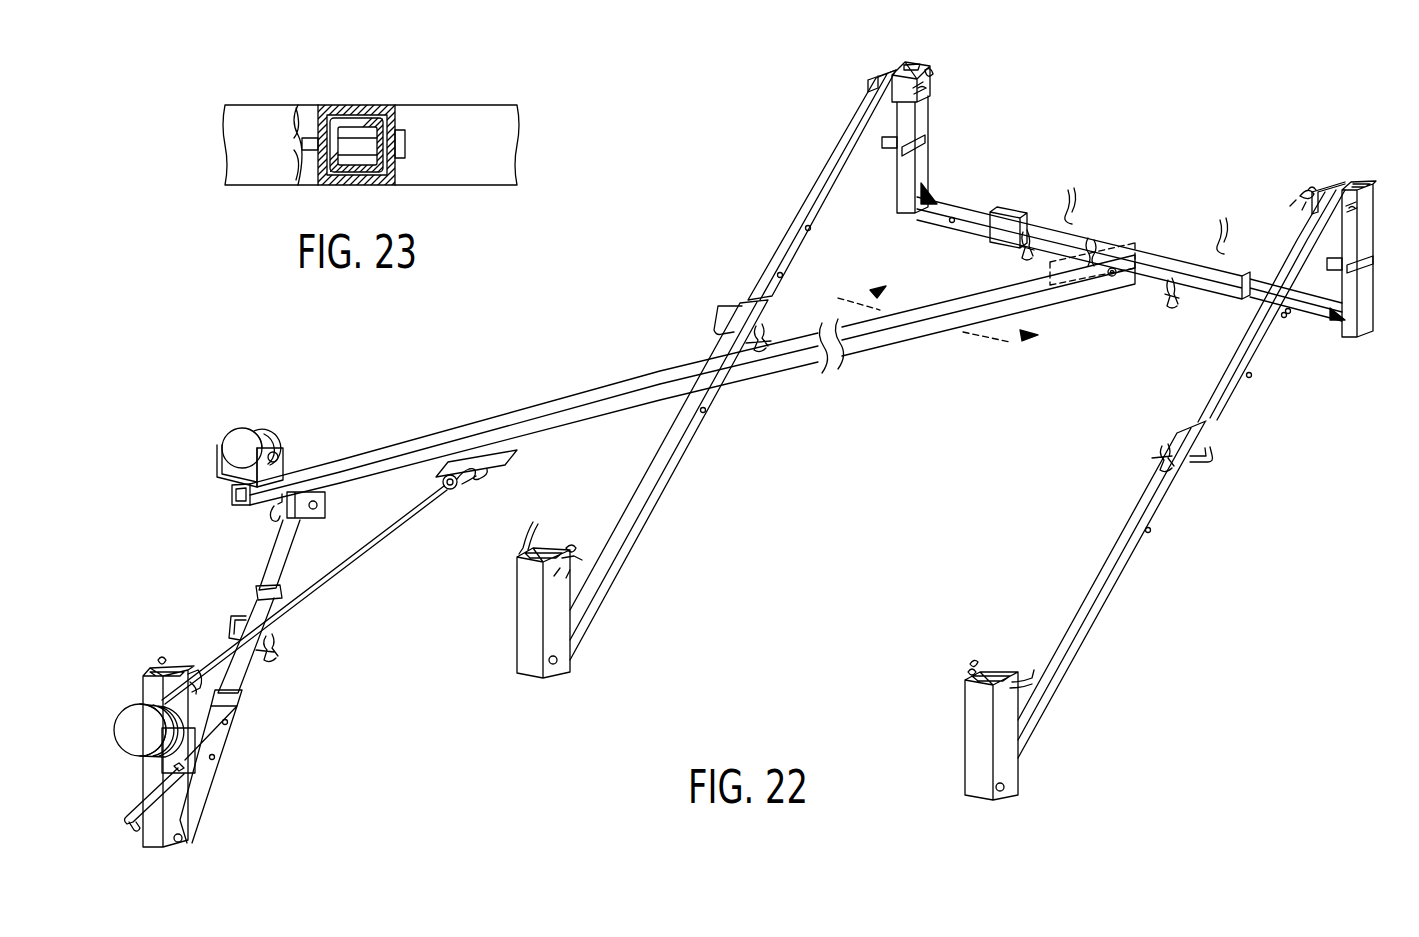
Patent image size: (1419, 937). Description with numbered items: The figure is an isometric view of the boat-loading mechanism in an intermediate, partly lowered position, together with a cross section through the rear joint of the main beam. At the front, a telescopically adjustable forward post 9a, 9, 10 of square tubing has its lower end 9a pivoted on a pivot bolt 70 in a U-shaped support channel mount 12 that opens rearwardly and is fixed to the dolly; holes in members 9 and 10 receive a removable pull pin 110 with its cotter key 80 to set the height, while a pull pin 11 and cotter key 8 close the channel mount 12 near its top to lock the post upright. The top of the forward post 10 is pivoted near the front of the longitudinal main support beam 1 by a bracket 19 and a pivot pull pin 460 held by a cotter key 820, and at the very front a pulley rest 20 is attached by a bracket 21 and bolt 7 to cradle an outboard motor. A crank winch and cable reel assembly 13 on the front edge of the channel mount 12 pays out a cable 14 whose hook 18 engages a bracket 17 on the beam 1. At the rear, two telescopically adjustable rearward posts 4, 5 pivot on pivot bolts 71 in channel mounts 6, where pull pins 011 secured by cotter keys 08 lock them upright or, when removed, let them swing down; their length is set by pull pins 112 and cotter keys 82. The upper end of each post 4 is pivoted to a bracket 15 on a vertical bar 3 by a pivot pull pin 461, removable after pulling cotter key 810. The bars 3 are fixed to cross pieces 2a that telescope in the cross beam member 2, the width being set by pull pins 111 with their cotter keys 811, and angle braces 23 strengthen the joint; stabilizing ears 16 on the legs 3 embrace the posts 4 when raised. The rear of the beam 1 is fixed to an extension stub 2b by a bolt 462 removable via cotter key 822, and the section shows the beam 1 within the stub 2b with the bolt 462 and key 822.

In FIG. 23, the longitudinal main support beam 1 is at (358, 108).
In FIG. 22, the longitudinal main support beam 1 is at (578, 389).
In FIG. 23, the cross beam member 2 is at (434, 105).
In FIG. 22, the cross beam member 2 is at (1084, 229).
In FIG. 22, the horizontal cross piece 2a is at (947, 236).
In FIG. 23, the cross-beam extension stub 2b is at (354, 186).
In FIG. 22, the cross-beam extension stub 2b is at (1050, 272).
In FIG. 22, the vertical bar 3 is at (928, 170).
In FIG. 22, the rearward post 4 is at (1222, 420).
In FIG. 22, the rearward post 5 is at (1150, 535).
In FIG. 22, the channel mount 6 is at (517, 584).
In FIG. 22, the bolt 7 is at (280, 456).
In FIG. 22, the cotter key 8 is at (158, 659).
In FIG. 22, the forward post member 9 is at (242, 684).
In FIG. 22, the forward post lower end 9a is at (220, 740).
In FIG. 22, the forward post member 10 is at (270, 572).
In FIG. 22, the pull pin 11 is at (202, 676).
In FIG. 22, the support channel mount 12 is at (142, 792).
In FIG. 22, the crank winch and cable reel assembly 13 is at (136, 710).
In FIG. 22, the cable 14 is at (340, 568).
In FIG. 22, the bracket 15 is at (878, 75).
In FIG. 22, the stabilizing ear or bracket 16 is at (926, 144).
In FIG. 22, the bracket 17 is at (514, 457).
In FIG. 22, the hook 18 is at (477, 480).
In FIG. 22, the bracket 19 is at (312, 519).
In FIG. 22, the pulley rest 20 is at (236, 433).
In FIG. 22, the bracket 21 is at (216, 468).
In FIG. 22, the angle brace 23 is at (932, 198).
In FIG. 22, the pivot bolt 70 is at (182, 841).
In FIG. 22, the pivot bolt 71 is at (560, 666).
In FIG. 22, the cotter key 80 is at (273, 640).
In FIG. 22, the cotter key 82 is at (760, 332).
In FIG. 22, the cotter key 08 is at (572, 546).
In FIG. 22, the pull pin 011 is at (533, 522).
In FIG. 22, the pull pin 110 is at (236, 616).
In FIG. 22, the pull pin 111 is at (1072, 192).
In FIG. 22, the pull pin 112 is at (712, 304).
In FIG. 22, the pivot pull pin 460 is at (319, 504).
In FIG. 22, the pivot pull pin 461 is at (926, 92).
In FIG. 23, the bolt 462 is at (408, 145).
In FIG. 22, the bolt 462 is at (1110, 276).
In FIG. 22, the cotter key 810 is at (929, 75).
In FIG. 22, the cotter key 811 is at (1028, 229).
In FIG. 22, the cotter key 820 is at (270, 521).
In FIG. 23, the cotter key 822 is at (304, 110).
In FIG. 22, the cotter key 822 is at (1092, 250).